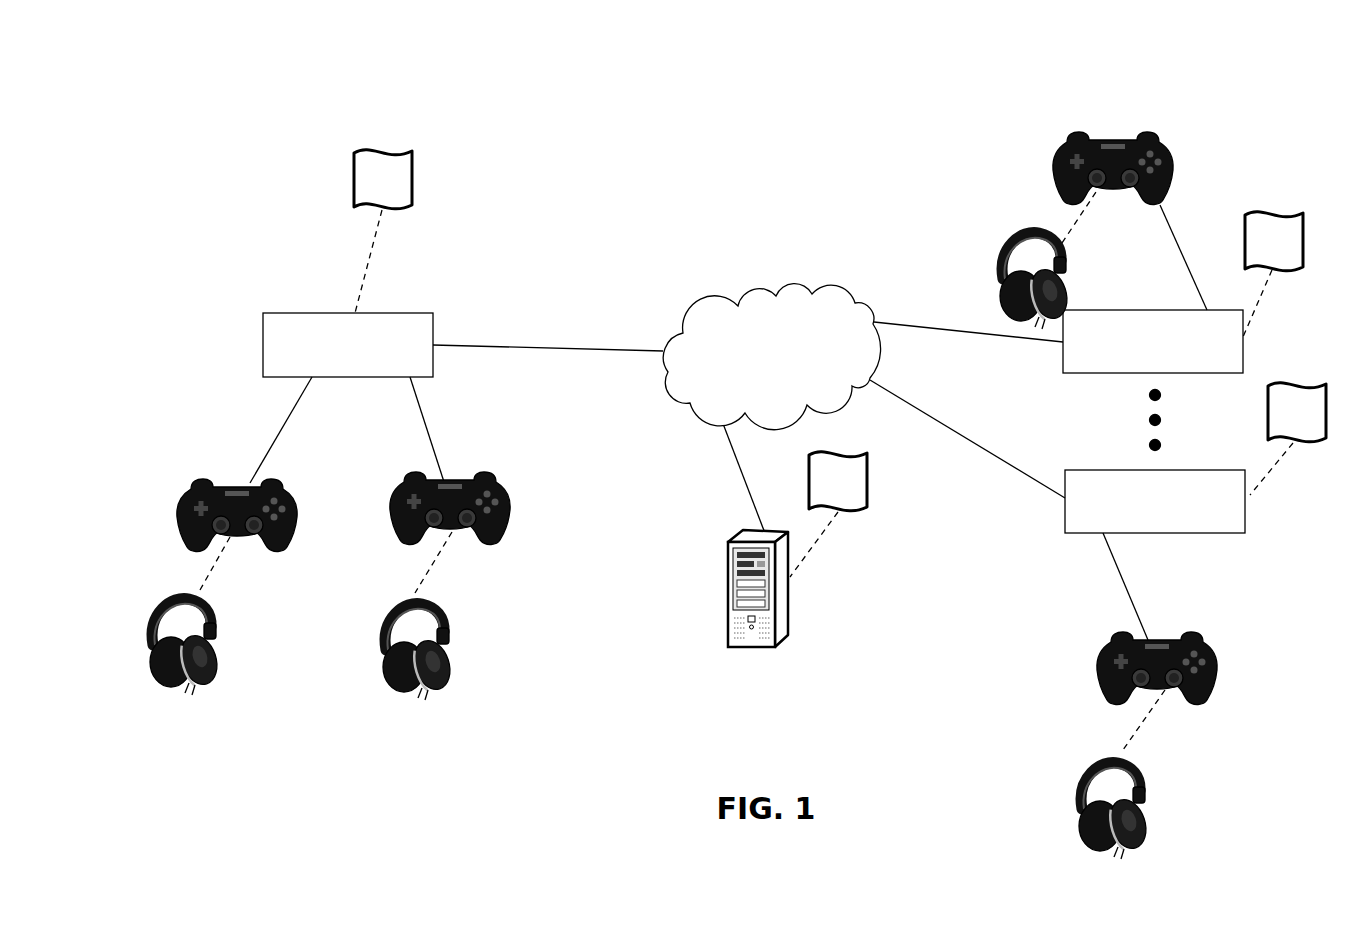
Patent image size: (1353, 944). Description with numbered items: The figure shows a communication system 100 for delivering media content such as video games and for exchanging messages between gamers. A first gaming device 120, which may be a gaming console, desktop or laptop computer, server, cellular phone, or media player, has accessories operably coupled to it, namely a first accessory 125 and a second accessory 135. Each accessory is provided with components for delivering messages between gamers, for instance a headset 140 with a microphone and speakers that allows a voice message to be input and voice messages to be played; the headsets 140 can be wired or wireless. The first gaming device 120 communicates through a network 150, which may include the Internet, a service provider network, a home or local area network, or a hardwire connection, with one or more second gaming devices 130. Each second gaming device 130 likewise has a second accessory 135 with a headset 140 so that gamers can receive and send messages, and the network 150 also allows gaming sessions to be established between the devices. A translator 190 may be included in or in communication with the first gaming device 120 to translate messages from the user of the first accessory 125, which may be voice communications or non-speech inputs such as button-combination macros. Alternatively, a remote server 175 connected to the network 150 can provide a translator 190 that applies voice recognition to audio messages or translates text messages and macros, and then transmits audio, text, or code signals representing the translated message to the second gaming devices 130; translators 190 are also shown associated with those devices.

The communication system 100 is at (703, 483).
The first gaming device 120 is at (348, 345).
The first accessory 125 is at (280, 543).
The second gaming device 130 is at (1154, 421).
The second accessory 135 is at (497, 533).
The headset 140 is at (190, 682).
The network 150 is at (771, 357).
The remote server 175 is at (765, 540).
The translator 190 is at (840, 363).